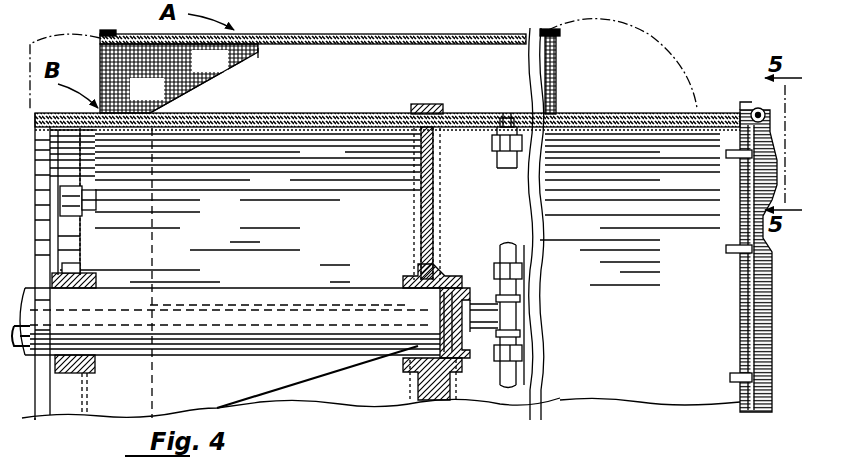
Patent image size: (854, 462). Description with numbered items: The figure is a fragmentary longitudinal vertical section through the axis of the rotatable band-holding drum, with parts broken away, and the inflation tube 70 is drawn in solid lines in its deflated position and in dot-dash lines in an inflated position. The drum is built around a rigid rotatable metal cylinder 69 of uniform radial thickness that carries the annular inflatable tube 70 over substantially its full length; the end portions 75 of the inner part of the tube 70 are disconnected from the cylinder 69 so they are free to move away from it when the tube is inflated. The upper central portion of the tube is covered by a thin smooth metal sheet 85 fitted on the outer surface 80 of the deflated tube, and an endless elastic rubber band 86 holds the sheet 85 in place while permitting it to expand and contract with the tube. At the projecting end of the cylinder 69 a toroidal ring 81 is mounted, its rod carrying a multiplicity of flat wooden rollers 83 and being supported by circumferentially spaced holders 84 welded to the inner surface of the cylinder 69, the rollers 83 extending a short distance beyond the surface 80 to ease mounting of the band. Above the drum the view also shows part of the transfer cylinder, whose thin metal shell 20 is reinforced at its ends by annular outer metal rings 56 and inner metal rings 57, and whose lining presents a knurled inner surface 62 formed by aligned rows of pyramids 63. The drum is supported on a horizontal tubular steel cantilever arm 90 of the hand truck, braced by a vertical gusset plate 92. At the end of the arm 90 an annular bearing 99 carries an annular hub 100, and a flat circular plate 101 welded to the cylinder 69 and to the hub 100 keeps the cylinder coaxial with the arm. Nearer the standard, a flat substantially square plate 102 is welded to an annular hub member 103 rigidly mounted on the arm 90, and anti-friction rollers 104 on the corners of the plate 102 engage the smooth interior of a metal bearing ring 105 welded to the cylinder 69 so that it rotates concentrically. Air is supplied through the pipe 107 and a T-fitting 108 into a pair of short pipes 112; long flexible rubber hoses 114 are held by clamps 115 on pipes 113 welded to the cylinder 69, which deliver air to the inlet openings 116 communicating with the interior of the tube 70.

The thin metal shell 20 is at (318, 34).
The annular outer metal rings 56 is at (112, 22).
The annular inner metal rings 57 is at (557, 62).
The knurled inner surface 62 is at (210, 61).
The pyramids 63 is at (252, 72).
The rigid rotatable metal cylinder 69 is at (390, 207).
The annular inflatable tube 70 is at (568, 113).
The end portions 75 is at (703, 108).
The outer surface of the deflated tube 80 is at (179, 78).
The toroidal ring 81 is at (778, 380).
The flat wooden rollers 83 is at (752, 106).
The holders 84 is at (738, 152).
The metal sheet 85 is at (248, 110).
The endless elastic rubber band 86 is at (420, 104).
The horizontal tubular steel cantilever arm 90 is at (208, 288).
The vertical gusset plate 92 is at (315, 372).
The annular bearing 99 is at (402, 276).
The annular hub 100 is at (440, 372).
The flat circular plate 101 is at (420, 204).
The flat substantially square plate 102 is at (82, 258).
The annular hub member 103 is at (78, 374).
The anti-friction rollers 104 is at (86, 206).
The metal bearing ring 105 is at (83, 266).
The pipe 107 is at (278, 304).
The T-fitting 108 is at (500, 314).
The short pipes 112 is at (520, 298).
The pipes 113 is at (500, 142).
The long flexible rubber hoses 114 is at (526, 170).
The clamps 115 is at (526, 148).
The inlet openings 116 is at (507, 118).